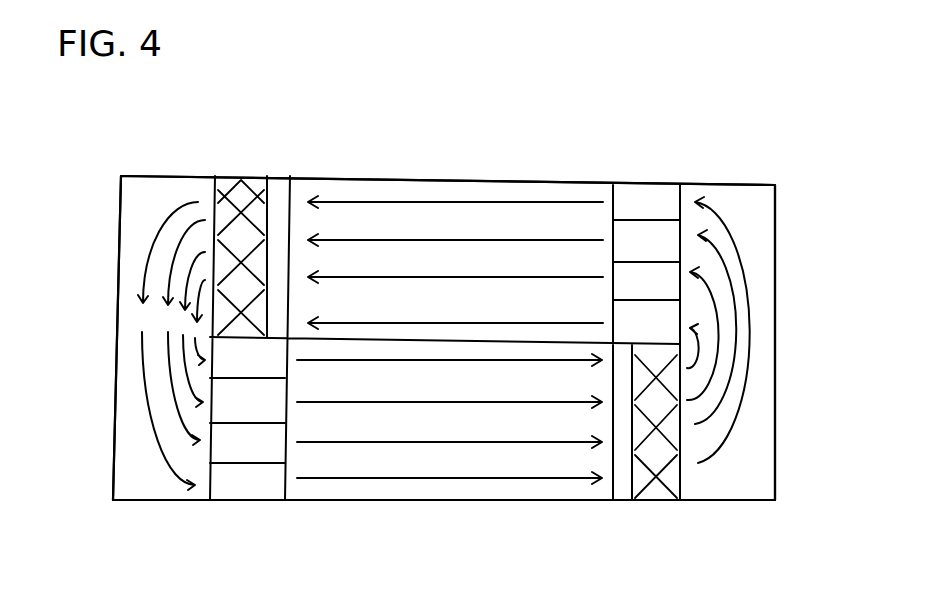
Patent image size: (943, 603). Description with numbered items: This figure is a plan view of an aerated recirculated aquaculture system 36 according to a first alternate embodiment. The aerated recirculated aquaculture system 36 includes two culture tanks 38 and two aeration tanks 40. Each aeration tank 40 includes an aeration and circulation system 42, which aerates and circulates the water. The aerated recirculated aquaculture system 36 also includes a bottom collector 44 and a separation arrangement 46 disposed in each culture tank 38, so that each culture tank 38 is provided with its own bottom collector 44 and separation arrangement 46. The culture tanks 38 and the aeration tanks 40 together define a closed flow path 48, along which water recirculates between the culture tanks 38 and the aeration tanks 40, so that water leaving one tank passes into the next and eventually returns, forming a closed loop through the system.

The aerated recirculated aquaculture system 36 is at (402, 138).
The culture tank 38 is at (352, 180).
The aeration tank 40 is at (118, 235).
The aeration and circulation system 42 is at (650, 200).
The bottom collector 44 is at (285, 190).
The separation arrangement 46 is at (237, 200).
The closed flow path 48 is at (485, 200).